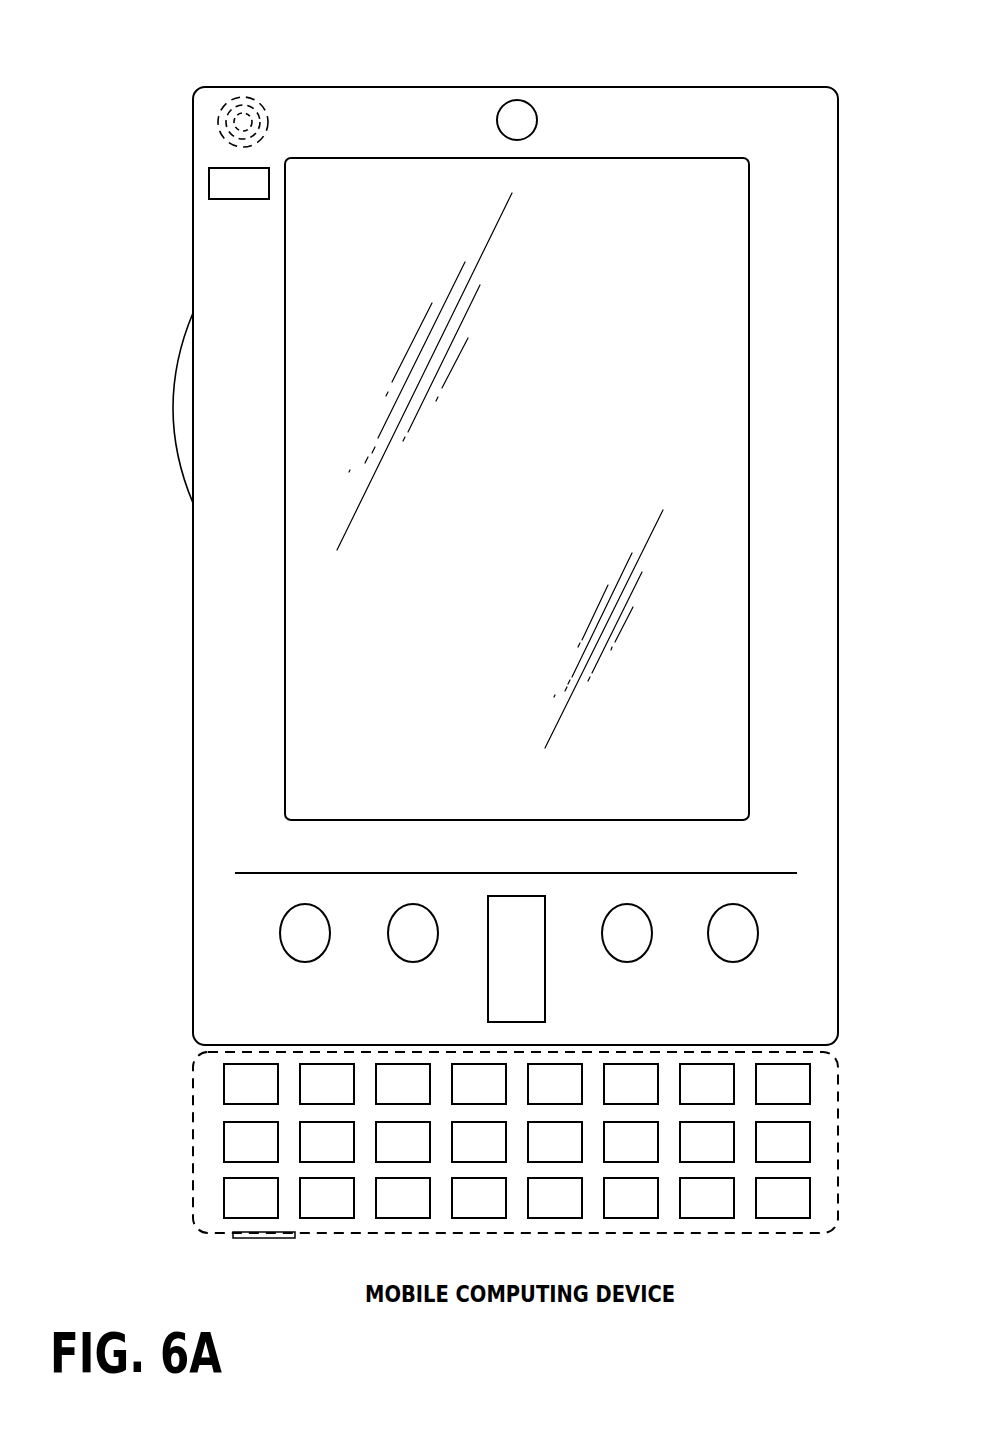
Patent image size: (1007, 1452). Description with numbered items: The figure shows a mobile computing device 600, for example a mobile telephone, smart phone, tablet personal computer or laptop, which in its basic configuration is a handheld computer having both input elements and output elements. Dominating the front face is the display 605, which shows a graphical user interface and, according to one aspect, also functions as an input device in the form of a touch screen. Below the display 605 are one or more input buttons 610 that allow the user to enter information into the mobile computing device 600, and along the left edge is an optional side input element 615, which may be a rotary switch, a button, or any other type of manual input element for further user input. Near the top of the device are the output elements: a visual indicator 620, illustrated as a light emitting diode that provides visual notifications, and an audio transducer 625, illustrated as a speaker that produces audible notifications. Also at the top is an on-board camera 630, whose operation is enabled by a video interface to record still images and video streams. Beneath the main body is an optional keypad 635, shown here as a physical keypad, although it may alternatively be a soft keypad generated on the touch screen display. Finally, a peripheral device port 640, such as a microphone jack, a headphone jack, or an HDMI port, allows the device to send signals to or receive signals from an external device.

The mobile computing device 600 is at (803, 87).
The display 605 is at (307, 658).
The input buttons 610 is at (305, 962).
The side input element 615 is at (173, 408).
The visual indicator 620 is at (209, 187).
The audio transducer 625 is at (215, 122).
The on-board camera 630 is at (518, 100).
The keypad 635 is at (203, 1140).
The peripheral device port 640 is at (242, 1238).